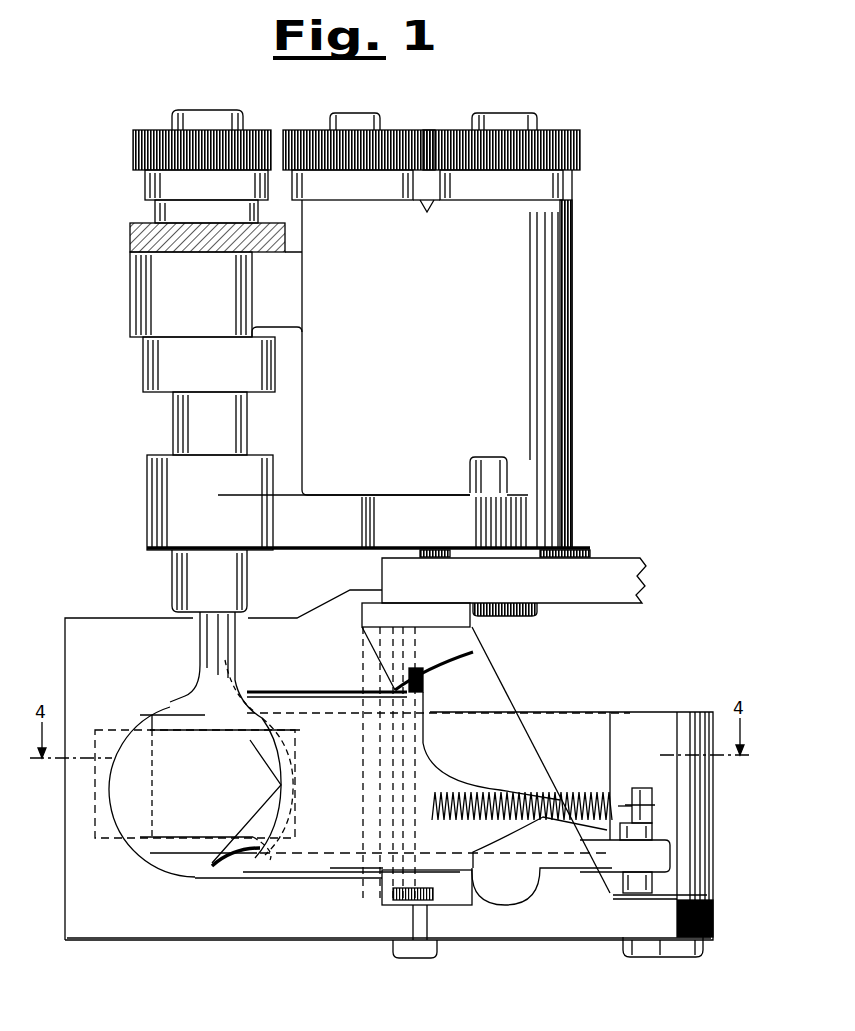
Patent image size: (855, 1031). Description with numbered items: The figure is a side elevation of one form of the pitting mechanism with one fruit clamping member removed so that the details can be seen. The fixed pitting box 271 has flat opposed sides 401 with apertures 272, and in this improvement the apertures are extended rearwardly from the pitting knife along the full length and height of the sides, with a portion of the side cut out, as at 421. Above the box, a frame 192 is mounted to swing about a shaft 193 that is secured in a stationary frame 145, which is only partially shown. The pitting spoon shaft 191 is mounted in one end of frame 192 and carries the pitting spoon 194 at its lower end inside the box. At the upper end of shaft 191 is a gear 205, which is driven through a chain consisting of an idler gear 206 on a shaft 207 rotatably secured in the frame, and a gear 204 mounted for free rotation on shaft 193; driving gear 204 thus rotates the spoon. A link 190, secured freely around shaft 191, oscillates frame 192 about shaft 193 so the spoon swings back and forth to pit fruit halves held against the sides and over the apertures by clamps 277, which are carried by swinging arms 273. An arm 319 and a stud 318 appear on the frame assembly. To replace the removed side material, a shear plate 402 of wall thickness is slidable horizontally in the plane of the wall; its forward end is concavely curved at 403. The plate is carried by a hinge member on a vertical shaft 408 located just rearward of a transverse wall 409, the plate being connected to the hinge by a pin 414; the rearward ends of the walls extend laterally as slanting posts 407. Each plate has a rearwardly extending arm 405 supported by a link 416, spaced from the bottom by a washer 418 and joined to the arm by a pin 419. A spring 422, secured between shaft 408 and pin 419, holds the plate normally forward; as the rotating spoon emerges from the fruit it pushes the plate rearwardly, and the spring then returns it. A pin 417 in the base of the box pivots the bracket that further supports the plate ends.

The gear 205 is at (185, 150).
The pitting spoon shaft 191 is at (203, 125).
The idler gear 206 is at (338, 148).
The shaft 207 is at (357, 125).
The shaft 193 is at (502, 123).
The gear 204 is at (543, 150).
The link 190 is at (130, 238).
The frame 192 is at (446, 294).
The stud 318 is at (487, 470).
The arm 319 is at (335, 527).
The stationary frame 145 is at (607, 579).
The pin 414 is at (397, 651).
The transverse wall 409 is at (363, 671).
The vertical shaft 408 is at (425, 681).
The arms 273 is at (178, 722).
The cut out 421 is at (200, 639).
The pitting spoon 194 is at (248, 740).
The clamps 277 is at (203, 797).
The concavely curved forward end 403 is at (279, 765).
The apertures 272 is at (167, 868).
The sides 401 is at (148, 904).
The pitting box 271 is at (174, 946).
The shear plates 402 is at (362, 812).
The slanting posts 407 is at (512, 767).
The springs 422 is at (545, 820).
The pins 419 is at (649, 790).
The link 416 is at (650, 833).
The rearwardly extending arm 405 is at (640, 858).
The washer 418 is at (697, 896).
The pin 417 is at (673, 946).